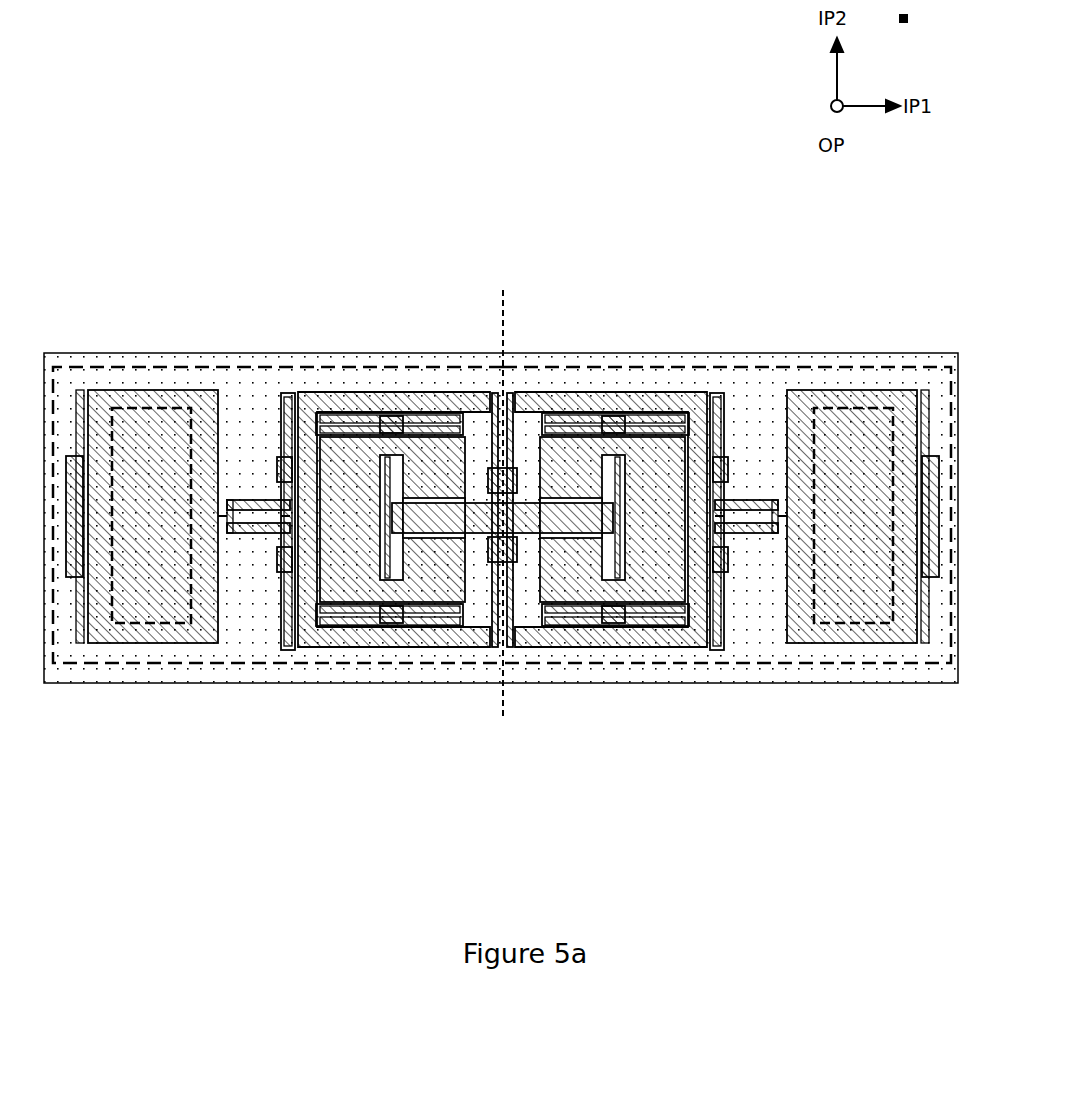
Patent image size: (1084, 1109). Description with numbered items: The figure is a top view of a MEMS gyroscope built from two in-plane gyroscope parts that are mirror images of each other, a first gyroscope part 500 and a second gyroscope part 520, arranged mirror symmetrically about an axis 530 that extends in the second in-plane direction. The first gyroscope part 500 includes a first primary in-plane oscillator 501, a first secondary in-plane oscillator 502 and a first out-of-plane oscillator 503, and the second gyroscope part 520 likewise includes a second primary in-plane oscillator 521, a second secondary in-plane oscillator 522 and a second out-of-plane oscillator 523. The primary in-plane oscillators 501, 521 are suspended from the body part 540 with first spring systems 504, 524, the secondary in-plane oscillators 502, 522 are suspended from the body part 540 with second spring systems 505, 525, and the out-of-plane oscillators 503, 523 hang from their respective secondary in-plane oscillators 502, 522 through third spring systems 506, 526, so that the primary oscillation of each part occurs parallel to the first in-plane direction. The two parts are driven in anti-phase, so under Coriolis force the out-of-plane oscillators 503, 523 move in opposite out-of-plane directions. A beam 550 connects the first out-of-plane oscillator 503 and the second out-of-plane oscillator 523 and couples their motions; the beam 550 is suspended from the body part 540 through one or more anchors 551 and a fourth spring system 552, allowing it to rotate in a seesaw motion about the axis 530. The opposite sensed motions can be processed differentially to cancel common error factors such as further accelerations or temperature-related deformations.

The first gyroscope part 500 is at (200, 367).
The first primary in-plane oscillator 501 is at (128, 398).
The first secondary in-plane oscillator 502 is at (330, 397).
The first out-of-plane oscillator 503 is at (410, 397).
The first spring system 504 is at (73, 397).
The second spring system 505 is at (277, 397).
The third spring system 506 is at (360, 398).
The second gyroscope part 520 is at (773, 368).
The second primary in-plane oscillator 521 is at (862, 395).
The second secondary in-plane oscillator 522 is at (670, 397).
The second out-of-plane oscillator 523 is at (582, 397).
The first spring system 524 is at (915, 395).
The second spring system 525 is at (738, 398).
The third spring system 526 is at (628, 397).
The axis 530 is at (507, 297).
The body part 540 is at (555, 357).
The beam 550 is at (480, 530).
The anchor 551 is at (510, 538).
The fourth spring system 552 is at (513, 540).